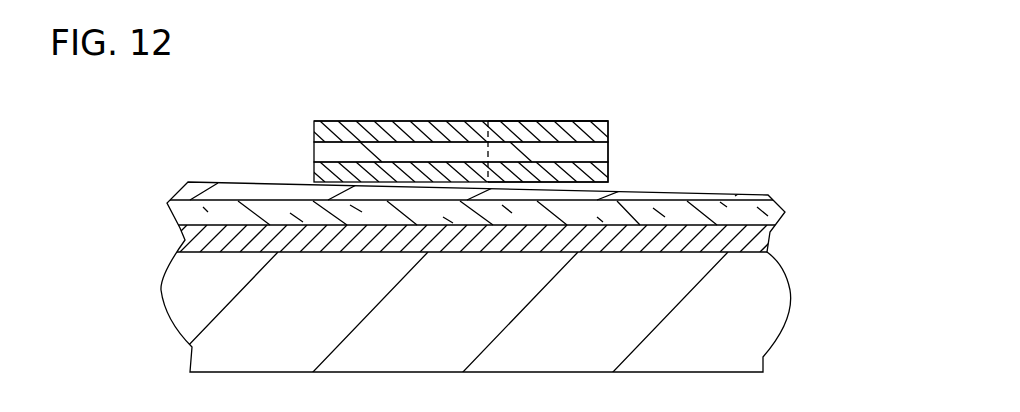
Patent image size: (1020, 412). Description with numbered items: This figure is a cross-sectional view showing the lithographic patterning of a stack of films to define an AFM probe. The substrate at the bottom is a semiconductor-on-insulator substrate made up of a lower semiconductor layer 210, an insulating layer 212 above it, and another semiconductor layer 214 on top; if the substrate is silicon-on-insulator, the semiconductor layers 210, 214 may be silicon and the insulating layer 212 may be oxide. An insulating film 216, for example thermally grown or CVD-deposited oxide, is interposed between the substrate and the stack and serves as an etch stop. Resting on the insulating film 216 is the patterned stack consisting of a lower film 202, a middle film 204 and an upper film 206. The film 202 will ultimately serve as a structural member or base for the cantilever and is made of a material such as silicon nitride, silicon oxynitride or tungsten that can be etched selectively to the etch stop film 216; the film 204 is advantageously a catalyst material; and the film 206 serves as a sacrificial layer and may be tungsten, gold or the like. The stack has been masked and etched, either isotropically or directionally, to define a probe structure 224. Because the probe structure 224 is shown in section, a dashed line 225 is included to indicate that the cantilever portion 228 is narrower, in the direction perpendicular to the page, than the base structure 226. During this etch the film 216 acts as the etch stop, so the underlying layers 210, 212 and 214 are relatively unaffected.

The semiconductor layer 210 is at (760, 323).
The insulating layer 212 is at (768, 240).
The semiconductor layer 214 is at (752, 215).
The insulating film 216 is at (762, 187).
The film 202 is at (608, 172).
The film 204 is at (608, 152).
The film 206 is at (608, 125).
The probe structure 224 is at (514, 106).
The dashed line 225 is at (486, 152).
The base structure 226 is at (338, 119).
The cantilever portion 228 is at (597, 100).